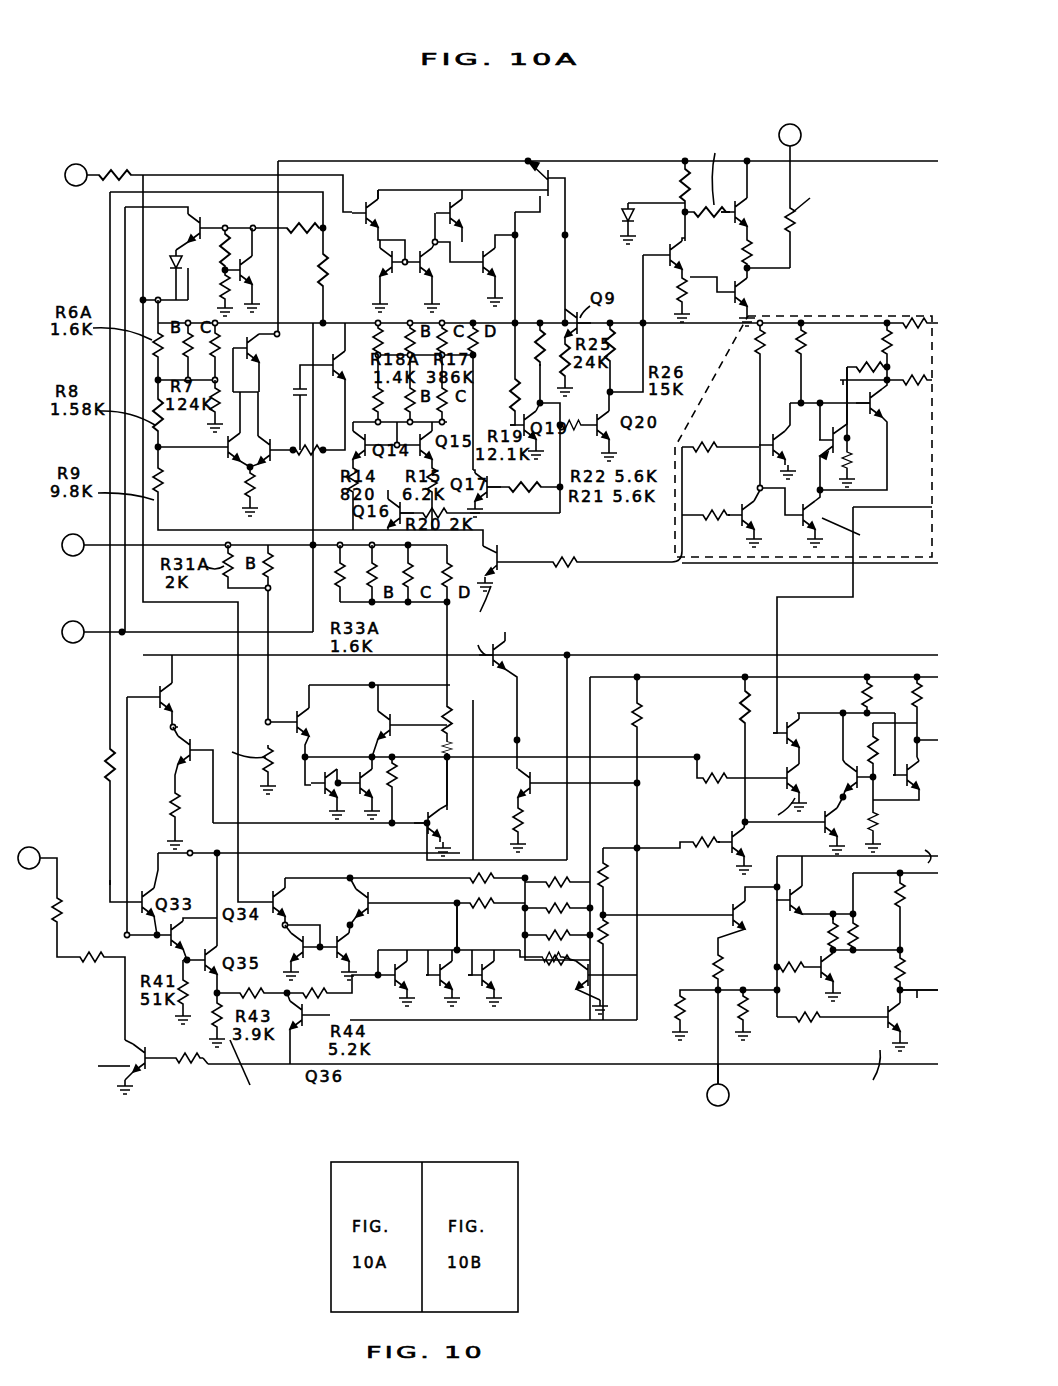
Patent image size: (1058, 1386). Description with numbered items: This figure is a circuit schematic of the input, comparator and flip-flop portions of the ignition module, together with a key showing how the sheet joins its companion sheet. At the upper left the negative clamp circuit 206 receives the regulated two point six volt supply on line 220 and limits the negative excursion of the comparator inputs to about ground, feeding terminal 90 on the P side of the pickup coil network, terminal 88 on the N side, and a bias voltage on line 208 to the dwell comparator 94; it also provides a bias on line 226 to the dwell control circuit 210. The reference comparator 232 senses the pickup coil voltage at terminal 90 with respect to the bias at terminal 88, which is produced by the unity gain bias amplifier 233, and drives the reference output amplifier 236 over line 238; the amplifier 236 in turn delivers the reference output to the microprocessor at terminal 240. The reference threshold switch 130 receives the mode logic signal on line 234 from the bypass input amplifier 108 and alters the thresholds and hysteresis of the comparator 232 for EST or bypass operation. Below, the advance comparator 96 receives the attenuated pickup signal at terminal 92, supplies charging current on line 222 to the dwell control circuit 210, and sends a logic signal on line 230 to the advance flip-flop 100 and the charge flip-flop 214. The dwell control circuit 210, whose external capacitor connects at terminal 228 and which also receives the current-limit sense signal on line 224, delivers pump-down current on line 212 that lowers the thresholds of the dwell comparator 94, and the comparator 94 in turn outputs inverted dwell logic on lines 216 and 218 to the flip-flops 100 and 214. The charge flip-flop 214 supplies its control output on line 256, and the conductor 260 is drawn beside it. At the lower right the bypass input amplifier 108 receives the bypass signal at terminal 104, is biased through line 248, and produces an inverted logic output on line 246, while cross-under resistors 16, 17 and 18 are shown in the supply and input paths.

The terminal 90 is at (66, 184).
The negative clamp circuit 206 is at (228, 206).
The reference comparator 232 is at (455, 153).
The terminal 240 is at (815, 112).
The reference output amplifier 236 is at (824, 297).
The line 238 is at (643, 266).
The line 220 is at (681, 290).
The bias amplifier 233 is at (242, 472).
The line 234 is at (655, 566).
The reference threshold switch 130 is at (578, 540).
The charge flip-flop 214 is at (807, 436).
The line 256 is at (843, 382).
The connection line 260 is at (848, 595).
The terminal 92 is at (63, 555).
The terminal 88 is at (63, 642).
The line 208 is at (236, 681).
The advance comparator 96 is at (540, 754).
The line 230 is at (540, 757).
The line 218 is at (578, 810).
The line 216 is at (660, 908).
The dwell comparator 94 is at (405, 862).
The line 222 is at (174, 822).
The line 226 is at (106, 882).
The terminal 228 is at (38, 848).
The line 212 is at (457, 937).
The dwell control circuit 210 is at (196, 1042).
The line 224 is at (475, 1064).
The terminal 104 is at (729, 1100).
The bypass input amplifier 108 is at (781, 1076).
The line 246 is at (917, 1000).
The line 248 is at (825, 902).
The advance flip-flop 100 is at (777, 652).
The current unit CU4 16 is at (644, 847).
The current unit CU3 17 is at (641, 938).
The current units CU1 and CU2 18 is at (100, 965).